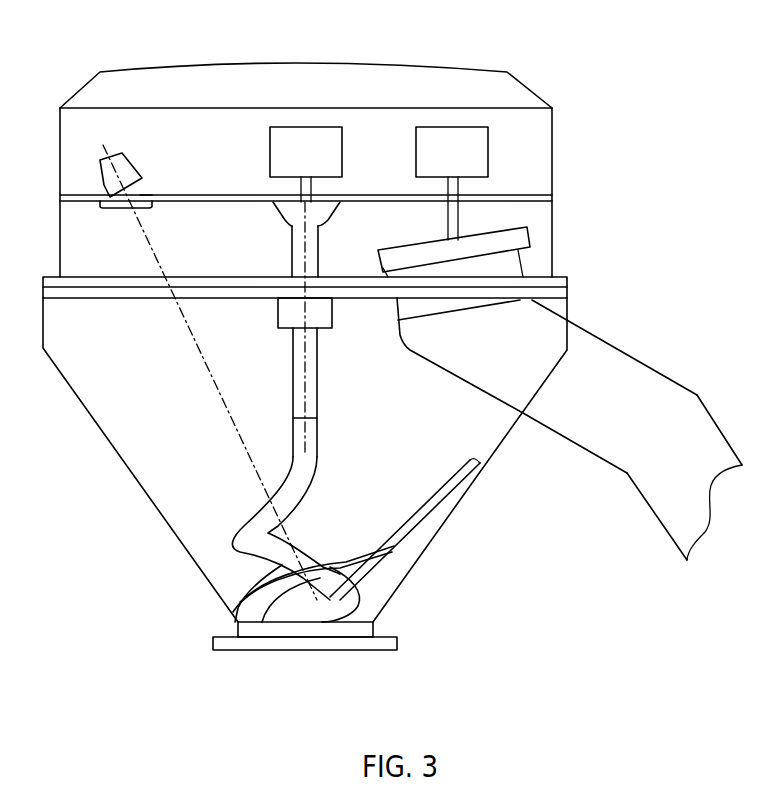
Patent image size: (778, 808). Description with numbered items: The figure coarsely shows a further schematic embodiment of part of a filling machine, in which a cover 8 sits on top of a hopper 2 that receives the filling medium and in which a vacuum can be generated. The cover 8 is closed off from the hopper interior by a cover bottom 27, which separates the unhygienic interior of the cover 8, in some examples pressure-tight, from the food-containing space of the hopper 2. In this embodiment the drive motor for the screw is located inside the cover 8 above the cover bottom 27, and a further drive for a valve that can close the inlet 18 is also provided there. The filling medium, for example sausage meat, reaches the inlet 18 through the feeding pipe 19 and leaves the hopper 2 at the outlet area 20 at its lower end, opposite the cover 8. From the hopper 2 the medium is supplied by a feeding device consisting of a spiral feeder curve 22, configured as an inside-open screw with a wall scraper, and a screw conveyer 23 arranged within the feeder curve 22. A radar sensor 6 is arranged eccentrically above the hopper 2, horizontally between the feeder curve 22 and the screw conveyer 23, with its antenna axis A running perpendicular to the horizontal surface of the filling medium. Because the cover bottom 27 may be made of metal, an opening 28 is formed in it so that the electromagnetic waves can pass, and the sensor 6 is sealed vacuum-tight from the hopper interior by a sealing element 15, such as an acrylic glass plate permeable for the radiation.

The cover 8 is at (306, 142).
The hopper 2 is at (60, 230).
The cover bottom 27 is at (207, 195).
The radar sensor 6 is at (130, 158).
The sealing element 15 is at (120, 208).
The opening 28 is at (144, 195).
The antenna axis A is at (206, 360).
The outlet area 20 is at (125, 463).
The inlet 18 is at (550, 322).
The feeding pipe 19 is at (693, 393).
The screw conveyer 23 is at (300, 497).
The feeder curve 22 is at (370, 556).